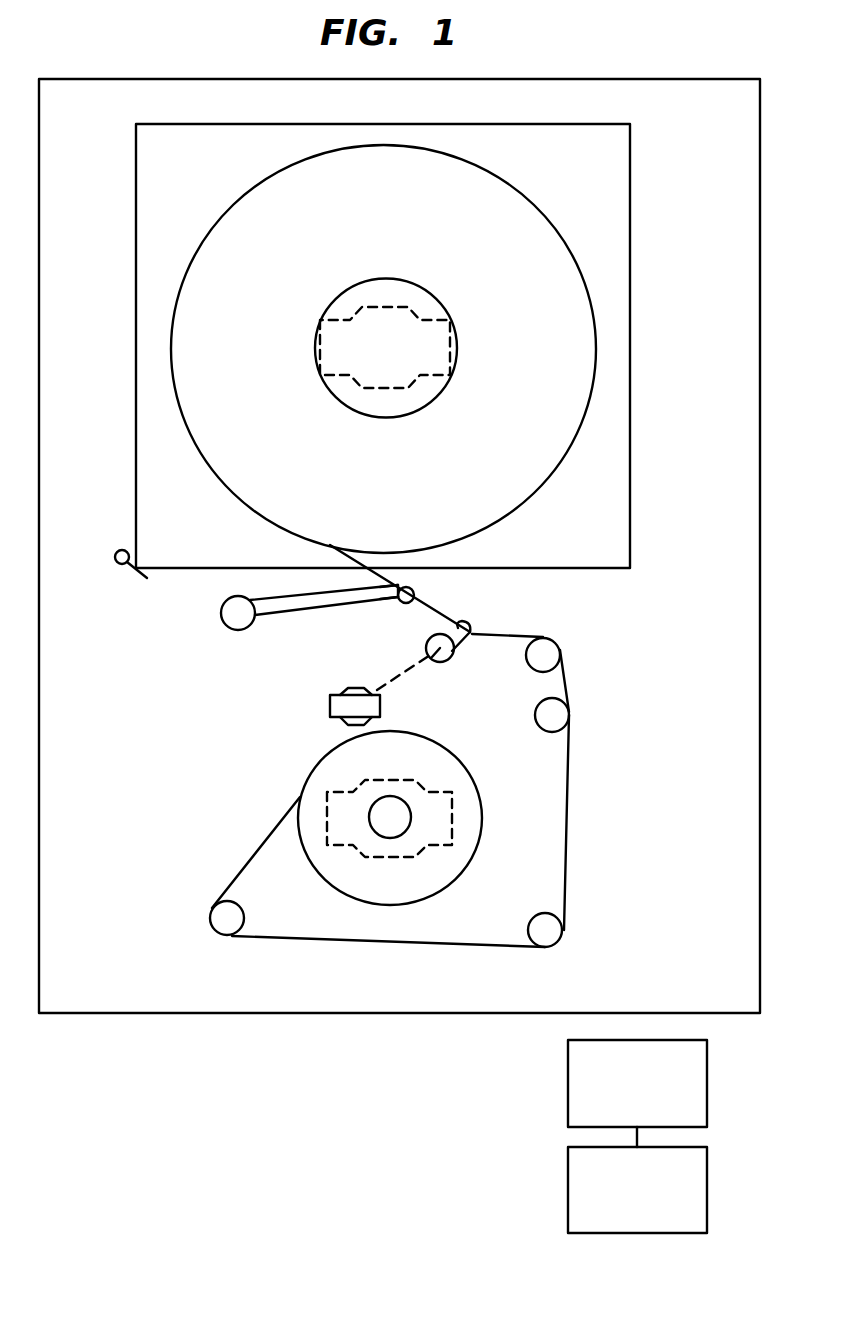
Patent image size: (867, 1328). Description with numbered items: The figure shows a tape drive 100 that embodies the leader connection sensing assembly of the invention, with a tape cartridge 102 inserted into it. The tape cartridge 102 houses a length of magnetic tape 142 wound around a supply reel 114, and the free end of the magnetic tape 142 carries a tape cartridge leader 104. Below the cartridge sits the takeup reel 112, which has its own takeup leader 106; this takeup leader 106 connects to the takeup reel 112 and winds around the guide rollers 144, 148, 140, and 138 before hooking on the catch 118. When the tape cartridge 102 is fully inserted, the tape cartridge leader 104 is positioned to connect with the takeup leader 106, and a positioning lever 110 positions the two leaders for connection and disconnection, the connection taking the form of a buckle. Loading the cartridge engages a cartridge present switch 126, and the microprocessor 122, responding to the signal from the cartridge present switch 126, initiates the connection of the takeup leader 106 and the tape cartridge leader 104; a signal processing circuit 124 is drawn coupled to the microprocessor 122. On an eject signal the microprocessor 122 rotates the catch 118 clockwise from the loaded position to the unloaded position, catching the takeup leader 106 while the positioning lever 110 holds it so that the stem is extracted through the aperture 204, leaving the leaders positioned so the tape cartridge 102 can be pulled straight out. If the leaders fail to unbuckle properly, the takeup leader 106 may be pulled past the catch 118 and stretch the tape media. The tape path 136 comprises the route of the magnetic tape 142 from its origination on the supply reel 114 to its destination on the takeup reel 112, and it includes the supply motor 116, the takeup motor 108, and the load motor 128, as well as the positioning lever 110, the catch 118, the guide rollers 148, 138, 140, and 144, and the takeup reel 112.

The tape drive 100 is at (350, 1013).
The tape cartridge 102 is at (136, 505).
The tape cartridge leader 104 is at (422, 597).
The takeup leader 106 is at (430, 616).
The takeup motor 108 is at (390, 857).
The positioning lever 110 is at (282, 608).
The takeup reel 112 is at (378, 905).
The supply reel 114 is at (533, 488).
The supply motor 116 is at (385, 388).
The catch 118 is at (437, 663).
The microprocessor 122 is at (707, 1192).
The signal processing circuit 124 is at (707, 1088).
The cartridge present switch 126 is at (120, 565).
The load motor 128 is at (330, 703).
The tape path 136 is at (603, 723).
The guide roller 138 is at (560, 650).
The guide roller 140 is at (565, 710).
The magnetic tape 142 is at (338, 551).
The guide roller 144 is at (215, 925).
The guide roller 148 is at (567, 940).
The aperture 204 is at (398, 600).